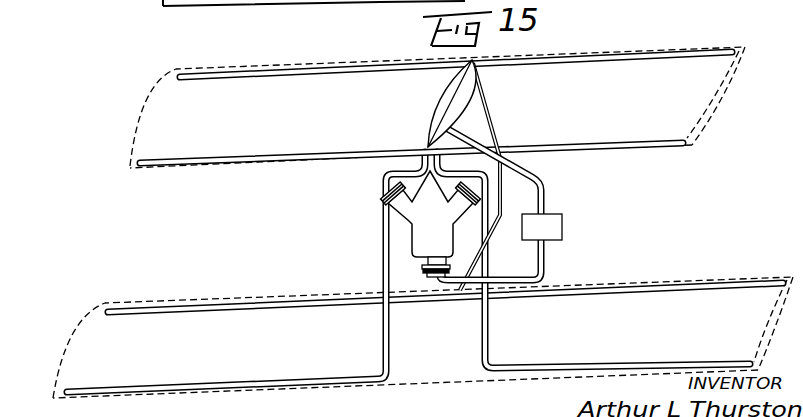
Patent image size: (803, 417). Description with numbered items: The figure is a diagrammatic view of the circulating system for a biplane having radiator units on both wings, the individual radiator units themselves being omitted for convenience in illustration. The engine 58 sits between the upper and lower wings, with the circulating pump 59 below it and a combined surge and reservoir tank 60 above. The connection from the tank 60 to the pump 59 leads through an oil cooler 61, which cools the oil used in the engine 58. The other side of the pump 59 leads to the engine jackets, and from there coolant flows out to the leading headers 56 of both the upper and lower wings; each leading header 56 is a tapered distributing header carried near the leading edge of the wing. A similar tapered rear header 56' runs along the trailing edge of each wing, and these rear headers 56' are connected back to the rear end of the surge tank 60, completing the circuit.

The leading header 56 is at (408, 280).
The rear header 56' is at (423, 208).
The engine 58 is at (413, 242).
The circulating pump 59 is at (432, 273).
The combined surge and reservoir tank 60 is at (437, 105).
The oil cooler 61 is at (563, 222).